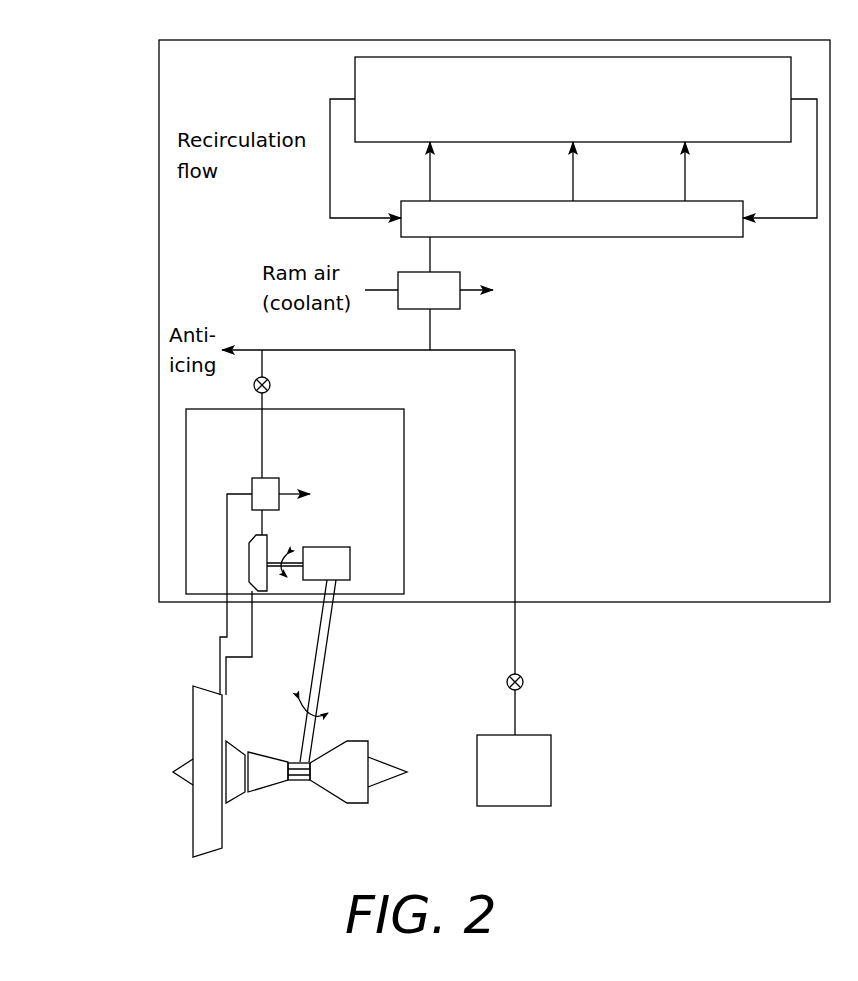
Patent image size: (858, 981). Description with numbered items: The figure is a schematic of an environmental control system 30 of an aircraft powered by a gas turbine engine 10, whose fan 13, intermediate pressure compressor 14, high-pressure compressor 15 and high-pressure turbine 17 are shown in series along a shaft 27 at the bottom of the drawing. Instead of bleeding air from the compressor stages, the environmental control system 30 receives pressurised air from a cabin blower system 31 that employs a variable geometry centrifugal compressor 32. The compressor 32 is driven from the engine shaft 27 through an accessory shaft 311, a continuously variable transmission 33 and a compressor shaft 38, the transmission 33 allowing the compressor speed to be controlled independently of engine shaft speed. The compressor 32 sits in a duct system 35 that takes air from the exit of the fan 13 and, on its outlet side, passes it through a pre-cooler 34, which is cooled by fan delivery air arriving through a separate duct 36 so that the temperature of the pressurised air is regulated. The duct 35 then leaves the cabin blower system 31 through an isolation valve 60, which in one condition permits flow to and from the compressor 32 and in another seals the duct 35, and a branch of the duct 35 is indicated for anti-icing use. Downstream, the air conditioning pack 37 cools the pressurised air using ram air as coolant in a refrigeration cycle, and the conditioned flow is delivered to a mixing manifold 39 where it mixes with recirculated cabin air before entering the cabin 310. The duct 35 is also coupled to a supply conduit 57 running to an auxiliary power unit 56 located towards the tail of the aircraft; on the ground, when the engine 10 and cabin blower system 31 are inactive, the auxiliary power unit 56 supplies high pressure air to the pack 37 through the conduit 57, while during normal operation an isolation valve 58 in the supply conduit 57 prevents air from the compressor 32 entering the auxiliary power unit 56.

The gas turbine engine 10 is at (233, 866).
The propulsive fan 13 is at (210, 838).
The intermediate pressure compressor 14 is at (240, 792).
The high-pressure compressor 15 is at (283, 790).
The high-pressure turbine 17 is at (358, 792).
The shaft 27 is at (296, 759).
The environmental control system 30 is at (203, 40).
The cabin blower system 31 is at (404, 494).
The centrifugal compressor 32 is at (256, 556).
The continuously variable transmission 33 is at (345, 565).
The pre-cooler 34 is at (252, 479).
The duct system 35 is at (262, 443).
The separate duct 36 is at (220, 660).
The air conditioning pack 37 is at (445, 277).
The compressor shaft 38 is at (292, 570).
The mixing manifold 39 is at (625, 228).
The cabin 310 is at (490, 127).
The accessory shaft 311 is at (320, 678).
The auxiliary power unit 56 is at (551, 768).
The supply conduit 57 is at (517, 635).
The isolation valve 58 is at (524, 682).
The isolation valve 60 is at (271, 385).